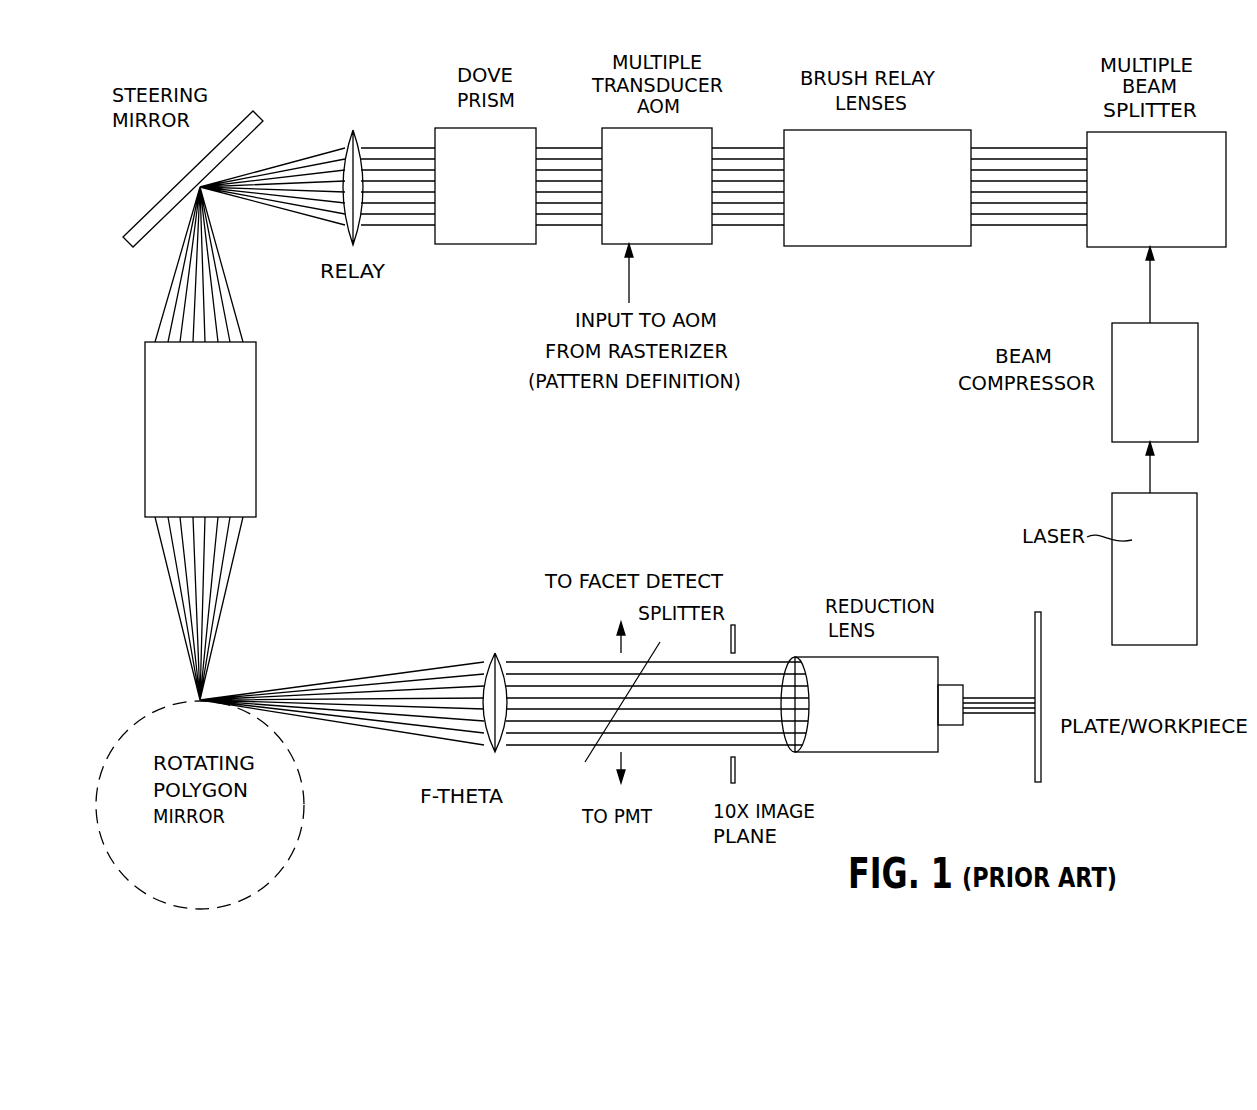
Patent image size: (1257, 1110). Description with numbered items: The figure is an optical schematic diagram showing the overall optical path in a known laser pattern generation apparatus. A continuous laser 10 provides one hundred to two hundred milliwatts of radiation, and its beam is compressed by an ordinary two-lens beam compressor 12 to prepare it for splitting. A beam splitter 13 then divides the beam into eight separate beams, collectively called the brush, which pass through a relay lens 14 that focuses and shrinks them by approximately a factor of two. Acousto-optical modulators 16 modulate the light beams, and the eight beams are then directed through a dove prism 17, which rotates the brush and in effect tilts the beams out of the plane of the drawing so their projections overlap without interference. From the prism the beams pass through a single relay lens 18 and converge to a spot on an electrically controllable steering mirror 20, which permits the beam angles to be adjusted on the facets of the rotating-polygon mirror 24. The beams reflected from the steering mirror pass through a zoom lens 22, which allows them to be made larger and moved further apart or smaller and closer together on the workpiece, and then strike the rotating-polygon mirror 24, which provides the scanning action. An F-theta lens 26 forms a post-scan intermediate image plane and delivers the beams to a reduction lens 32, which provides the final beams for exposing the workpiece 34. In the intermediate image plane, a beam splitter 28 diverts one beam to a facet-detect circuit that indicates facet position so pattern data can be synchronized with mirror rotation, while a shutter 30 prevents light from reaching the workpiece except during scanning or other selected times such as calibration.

The continuous laser 10 is at (1186, 629).
The beam compressor 12 is at (1183, 385).
The beam splitter 13 is at (1190, 192).
The relay lens 14 is at (905, 200).
The acousto-optical modulators 16 is at (691, 200).
The dove prism 17 is at (515, 204).
The relay lens 18 is at (356, 134).
The steering mirror 20 is at (264, 121).
The zoom lens 22 is at (256, 443).
The rotating-polygon mirror 24 is at (290, 832).
The F-theta lens 26 is at (492, 657).
The beam splitter 28 is at (592, 762).
The shutter 30 is at (737, 637).
The reduction lens 32 is at (874, 742).
The workpiece 34 is at (1041, 779).